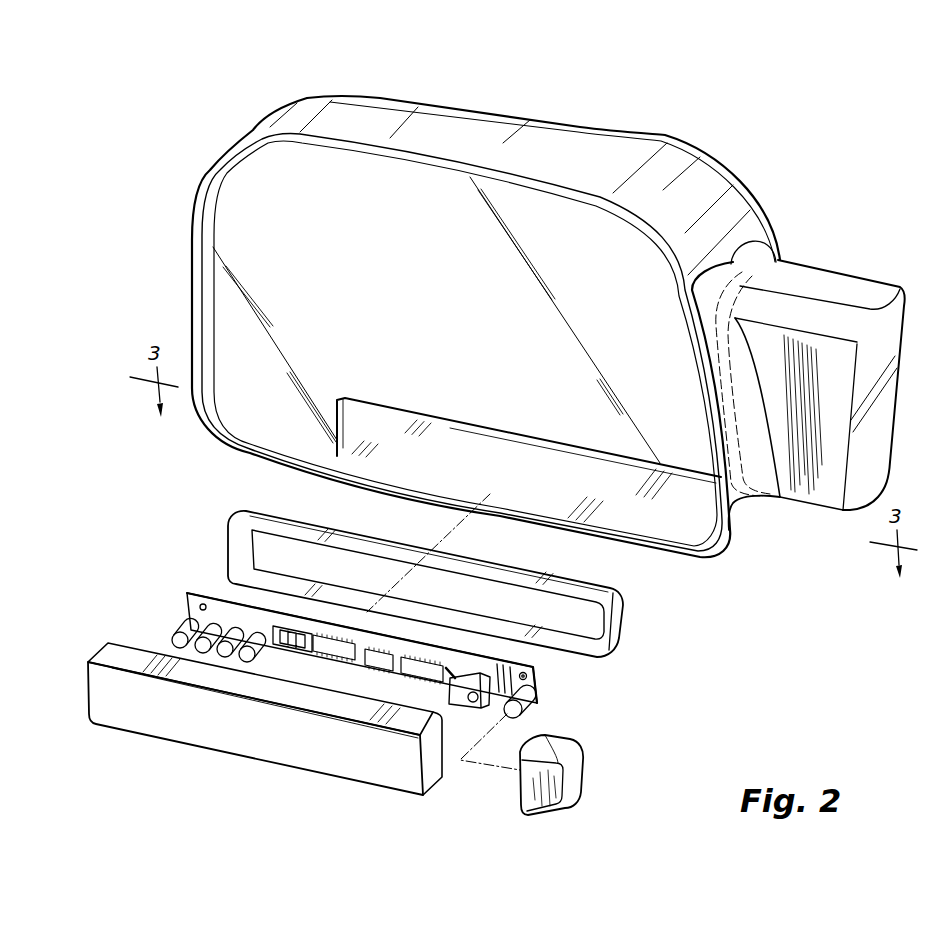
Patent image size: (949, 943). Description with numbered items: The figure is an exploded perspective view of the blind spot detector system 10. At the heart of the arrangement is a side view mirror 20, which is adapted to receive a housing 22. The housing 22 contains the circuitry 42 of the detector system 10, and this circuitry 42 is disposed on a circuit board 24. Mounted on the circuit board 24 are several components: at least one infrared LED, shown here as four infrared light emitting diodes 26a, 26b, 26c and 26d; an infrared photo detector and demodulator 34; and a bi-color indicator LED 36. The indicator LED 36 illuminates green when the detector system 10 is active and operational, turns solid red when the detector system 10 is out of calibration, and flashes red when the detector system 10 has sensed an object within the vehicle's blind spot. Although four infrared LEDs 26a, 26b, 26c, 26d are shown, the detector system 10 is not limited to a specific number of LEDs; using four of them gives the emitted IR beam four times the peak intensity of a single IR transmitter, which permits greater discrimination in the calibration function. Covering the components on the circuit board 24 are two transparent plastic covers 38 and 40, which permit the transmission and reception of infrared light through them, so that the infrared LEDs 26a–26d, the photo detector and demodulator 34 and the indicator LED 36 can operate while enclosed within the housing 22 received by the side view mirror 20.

The detector system 10 is at (208, 91).
The side view mirror 20 is at (737, 180).
The housing 22 is at (624, 608).
The circuit board 24 is at (186, 595).
The infrared LED 26a is at (172, 639).
The infrared LED 26b is at (200, 649).
The infrared LED 26c is at (226, 656).
The infrared LED 26d is at (248, 661).
The infrared photo detector and demodulator 34 is at (464, 700).
The bi-color indicator LED 36 is at (518, 716).
The transparent plastic cover 38 is at (242, 760).
The transparent plastic cover 40 is at (586, 783).
The circuitry 42 is at (536, 668).